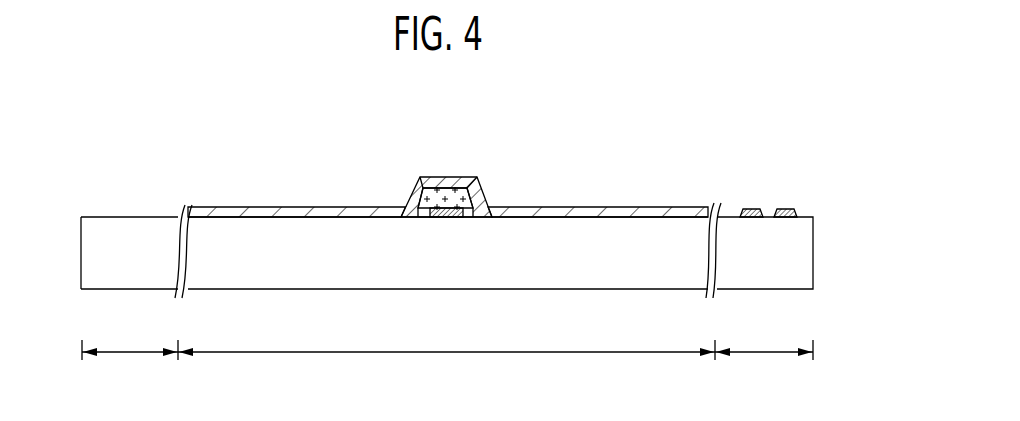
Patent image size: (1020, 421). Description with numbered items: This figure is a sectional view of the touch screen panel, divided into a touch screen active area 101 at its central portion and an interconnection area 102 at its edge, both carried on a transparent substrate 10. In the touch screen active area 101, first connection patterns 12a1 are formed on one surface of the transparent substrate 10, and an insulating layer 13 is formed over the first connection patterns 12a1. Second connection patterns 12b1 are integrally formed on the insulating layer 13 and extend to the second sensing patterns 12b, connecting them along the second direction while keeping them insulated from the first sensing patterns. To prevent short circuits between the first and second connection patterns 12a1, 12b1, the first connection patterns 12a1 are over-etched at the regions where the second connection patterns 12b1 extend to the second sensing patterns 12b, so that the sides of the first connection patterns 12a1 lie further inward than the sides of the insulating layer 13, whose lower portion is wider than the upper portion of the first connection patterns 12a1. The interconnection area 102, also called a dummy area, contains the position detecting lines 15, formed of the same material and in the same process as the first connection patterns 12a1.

The transparent substrate 10 is at (810, 251).
The second sensing patterns 12b is at (268, 207).
The second connection patterns 12b1 is at (449, 181).
The first connection patterns 12a1 is at (477, 177).
The insulating layer 13 is at (419, 177).
The position detecting lines 15 is at (795, 211).
The touch screen active area 101 is at (446, 368).
The interconnection area 102 is at (447, 364).